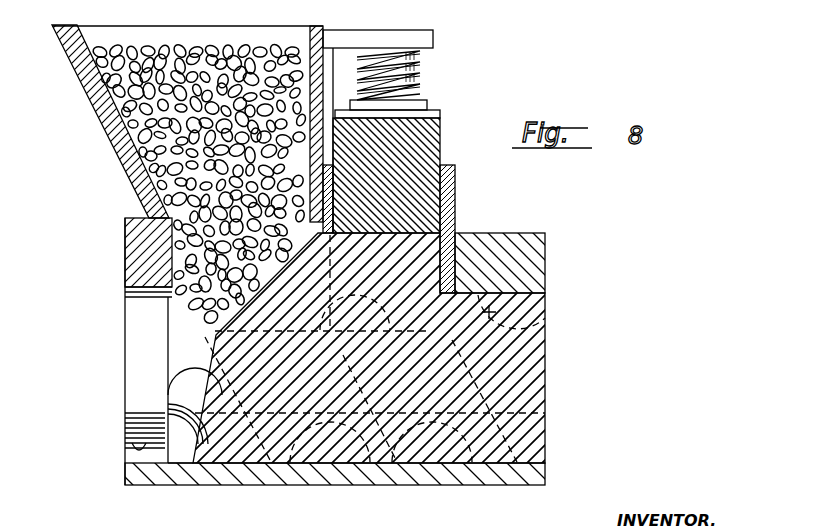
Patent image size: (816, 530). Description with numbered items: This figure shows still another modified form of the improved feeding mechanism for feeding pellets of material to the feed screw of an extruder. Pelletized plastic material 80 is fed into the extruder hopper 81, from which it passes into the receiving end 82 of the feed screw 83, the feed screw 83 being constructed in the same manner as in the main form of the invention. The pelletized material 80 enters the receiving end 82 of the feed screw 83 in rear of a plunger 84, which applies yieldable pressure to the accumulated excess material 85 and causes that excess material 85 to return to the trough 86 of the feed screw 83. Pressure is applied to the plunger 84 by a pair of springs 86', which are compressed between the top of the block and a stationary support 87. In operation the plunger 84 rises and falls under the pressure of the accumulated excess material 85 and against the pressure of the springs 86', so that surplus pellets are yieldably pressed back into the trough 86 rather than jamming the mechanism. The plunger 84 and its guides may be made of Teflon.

The pelletized material 80 is at (190, 60).
The extruder hopper 81 is at (115, 146).
The receiving end 82 is at (219, 466).
The feed screw 83 is at (392, 466).
The plunger 84 is at (440, 132).
The accumulated excess material 85 is at (432, 226).
The trough 86 is at (370, 378).
The springs 86' is at (435, 75).
The stationary support 87 is at (433, 40).